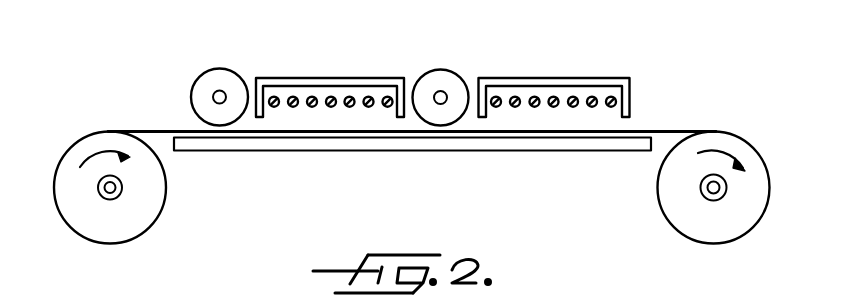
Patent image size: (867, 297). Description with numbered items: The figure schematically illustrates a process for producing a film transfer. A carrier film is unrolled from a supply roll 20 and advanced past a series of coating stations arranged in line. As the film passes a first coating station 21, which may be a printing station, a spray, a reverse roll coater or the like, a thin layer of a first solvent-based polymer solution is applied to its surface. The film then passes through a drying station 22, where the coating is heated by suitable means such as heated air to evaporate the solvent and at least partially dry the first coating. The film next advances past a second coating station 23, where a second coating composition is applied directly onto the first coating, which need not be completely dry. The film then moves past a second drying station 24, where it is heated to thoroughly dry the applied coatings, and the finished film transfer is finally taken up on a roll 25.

The supply roll 20 is at (75, 213).
The first coating station 21 is at (211, 76).
The drying station 22 is at (328, 77).
The second coating station 23 is at (447, 75).
The second drying station 24 is at (563, 77).
The roll 25 is at (757, 197).